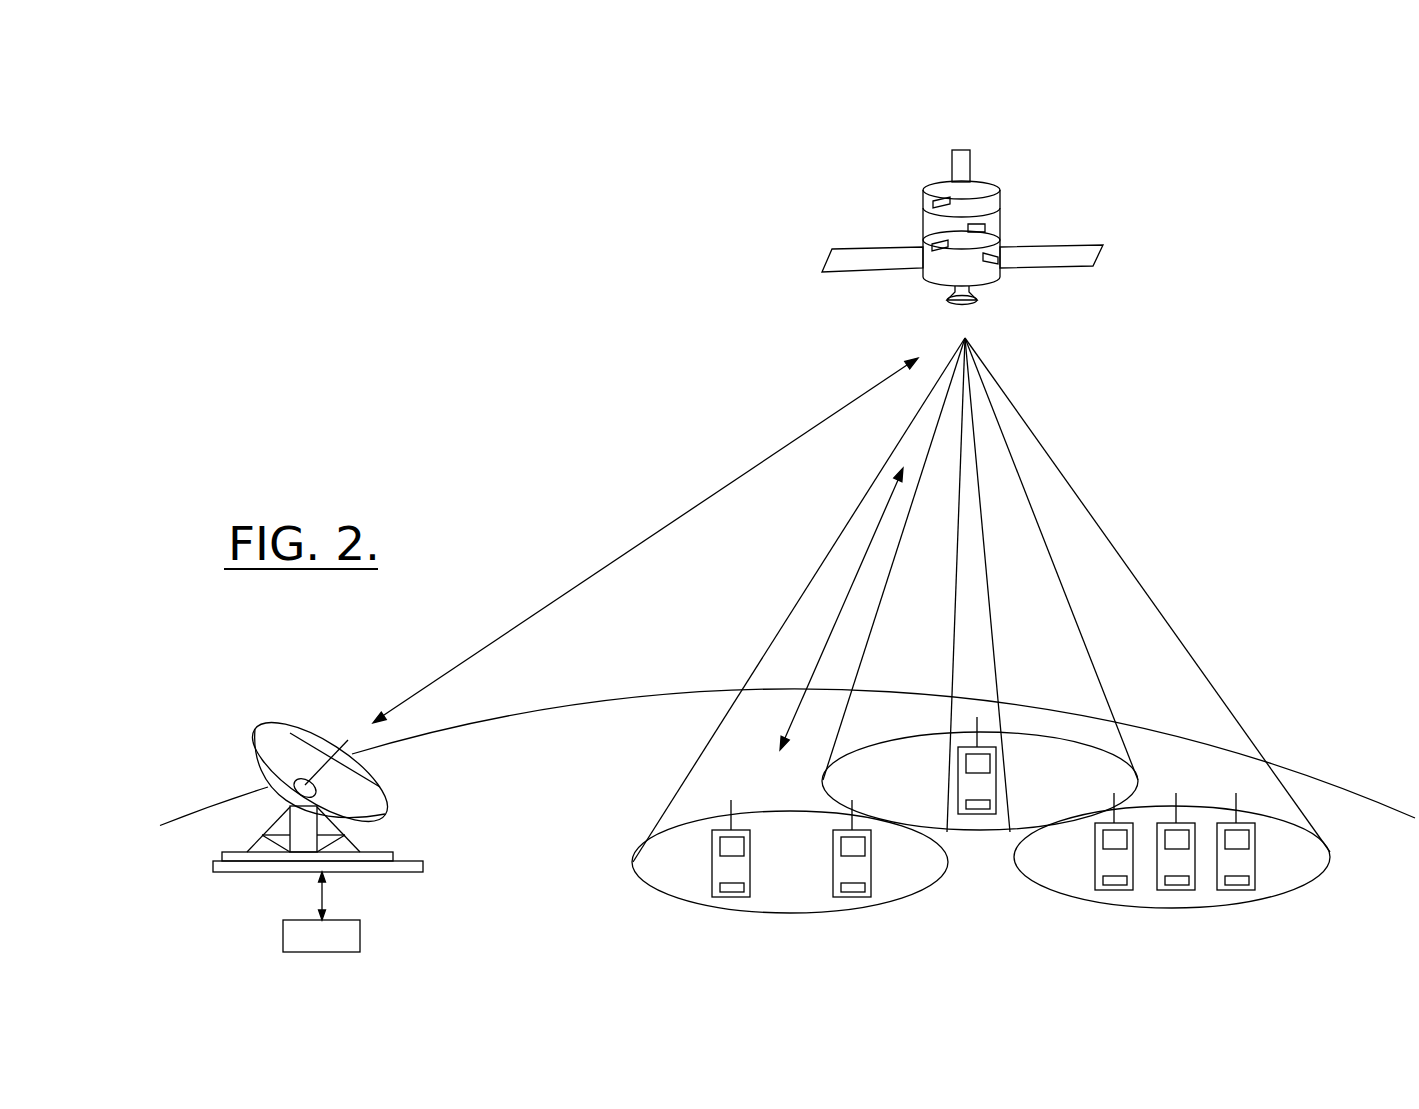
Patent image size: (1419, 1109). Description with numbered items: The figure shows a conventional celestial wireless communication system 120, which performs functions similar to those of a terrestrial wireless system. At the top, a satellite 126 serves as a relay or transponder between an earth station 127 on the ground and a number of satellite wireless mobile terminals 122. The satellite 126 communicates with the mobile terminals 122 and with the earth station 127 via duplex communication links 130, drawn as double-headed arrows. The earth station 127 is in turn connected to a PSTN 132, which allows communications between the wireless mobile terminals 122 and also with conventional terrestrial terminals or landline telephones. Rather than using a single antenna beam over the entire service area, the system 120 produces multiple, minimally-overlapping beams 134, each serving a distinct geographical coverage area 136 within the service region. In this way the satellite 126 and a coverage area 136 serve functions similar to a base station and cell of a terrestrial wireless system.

The celestial wireless communication system 120 is at (616, 231).
The satellite wireless mobile terminals 122 is at (997, 824).
The satellite 126 is at (980, 219).
The earth station 127 is at (296, 808).
The duplex communication links 130 is at (645, 554).
The PSTN 132 is at (357, 926).
The beams 134 is at (981, 600).
The coverage area 136 is at (981, 842).